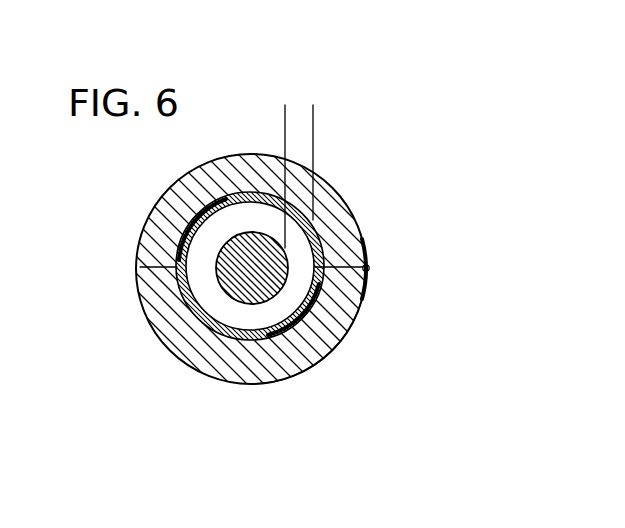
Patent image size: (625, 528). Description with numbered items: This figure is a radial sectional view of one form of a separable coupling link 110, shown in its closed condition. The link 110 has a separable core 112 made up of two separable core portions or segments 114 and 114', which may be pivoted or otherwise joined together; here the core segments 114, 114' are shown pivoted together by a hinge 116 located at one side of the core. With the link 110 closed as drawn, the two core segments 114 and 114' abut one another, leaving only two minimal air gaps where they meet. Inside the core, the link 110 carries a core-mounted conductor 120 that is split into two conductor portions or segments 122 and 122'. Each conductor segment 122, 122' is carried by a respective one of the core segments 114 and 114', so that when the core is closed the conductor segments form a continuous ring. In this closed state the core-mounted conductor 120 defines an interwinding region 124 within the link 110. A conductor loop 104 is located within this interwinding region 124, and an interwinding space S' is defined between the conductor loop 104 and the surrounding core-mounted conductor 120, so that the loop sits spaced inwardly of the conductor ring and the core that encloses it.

The link 110 is at (377, 133).
The separable core 112 is at (233, 175).
The interwinding space S' is at (298, 116).
The core segment 114 is at (271, 270).
The core segment 114' is at (350, 312).
The hinge 116 is at (369, 268).
The core-mounted conductor 120 is at (186, 306).
The conductor segment 122 is at (142, 229).
The conductor segment 122' is at (291, 355).
The interwinding region 124 is at (210, 240).
The conductor loop 104 is at (240, 287).